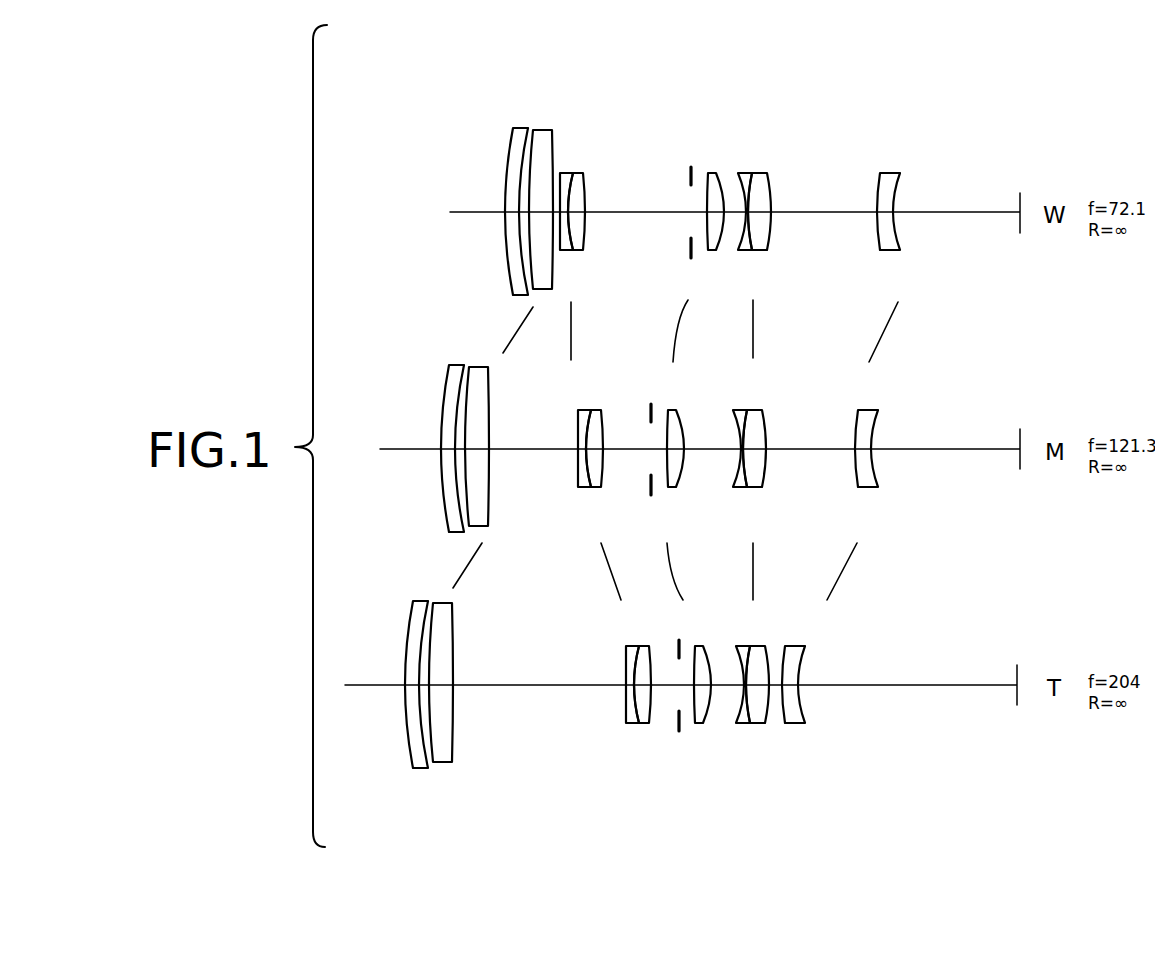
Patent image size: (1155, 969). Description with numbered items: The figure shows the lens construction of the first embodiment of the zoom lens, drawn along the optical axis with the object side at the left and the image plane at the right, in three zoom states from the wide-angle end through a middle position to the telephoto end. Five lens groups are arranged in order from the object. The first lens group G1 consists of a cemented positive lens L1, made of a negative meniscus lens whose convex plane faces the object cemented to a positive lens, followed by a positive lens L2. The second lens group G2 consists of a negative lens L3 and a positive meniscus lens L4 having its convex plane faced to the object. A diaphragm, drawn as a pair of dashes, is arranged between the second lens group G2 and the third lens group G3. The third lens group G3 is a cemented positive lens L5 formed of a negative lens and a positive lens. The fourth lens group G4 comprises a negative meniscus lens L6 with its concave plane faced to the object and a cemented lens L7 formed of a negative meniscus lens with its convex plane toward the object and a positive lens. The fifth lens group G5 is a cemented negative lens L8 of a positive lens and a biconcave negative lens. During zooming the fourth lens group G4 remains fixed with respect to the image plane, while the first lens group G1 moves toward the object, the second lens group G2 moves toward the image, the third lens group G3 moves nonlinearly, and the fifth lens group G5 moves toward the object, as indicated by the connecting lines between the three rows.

The first lens group G1 is at (578, 77).
The second lens group G2 is at (662, 128).
The third lens group G3 is at (725, 128).
The fourth lens group G4 is at (795, 128).
The fifth lens group G5 is at (915, 128).
The cemented positive lens L1 is at (538, 122).
The positive lens L2 is at (549, 130).
The negative lens L3 is at (563, 175).
The positive meniscus lens L4 is at (584, 176).
The cemented positive lens L5 is at (720, 165).
The negative meniscus lens L6 is at (742, 173).
The cemented lens L7 is at (795, 165).
The cemented negative lens L8 is at (912, 165).